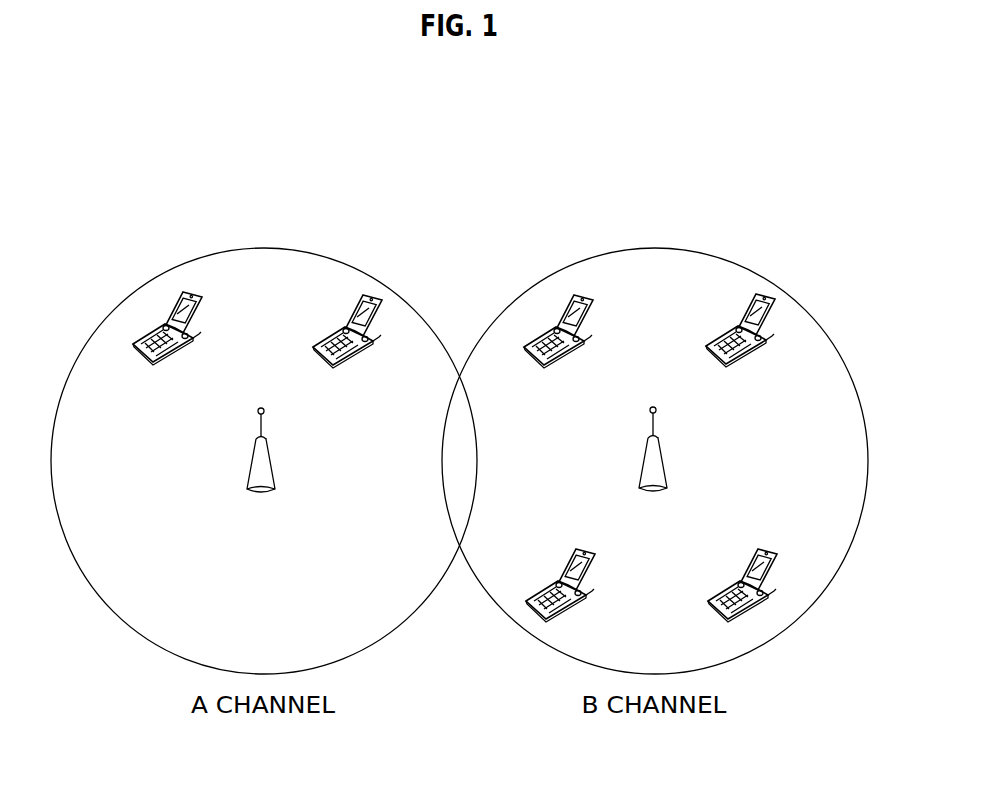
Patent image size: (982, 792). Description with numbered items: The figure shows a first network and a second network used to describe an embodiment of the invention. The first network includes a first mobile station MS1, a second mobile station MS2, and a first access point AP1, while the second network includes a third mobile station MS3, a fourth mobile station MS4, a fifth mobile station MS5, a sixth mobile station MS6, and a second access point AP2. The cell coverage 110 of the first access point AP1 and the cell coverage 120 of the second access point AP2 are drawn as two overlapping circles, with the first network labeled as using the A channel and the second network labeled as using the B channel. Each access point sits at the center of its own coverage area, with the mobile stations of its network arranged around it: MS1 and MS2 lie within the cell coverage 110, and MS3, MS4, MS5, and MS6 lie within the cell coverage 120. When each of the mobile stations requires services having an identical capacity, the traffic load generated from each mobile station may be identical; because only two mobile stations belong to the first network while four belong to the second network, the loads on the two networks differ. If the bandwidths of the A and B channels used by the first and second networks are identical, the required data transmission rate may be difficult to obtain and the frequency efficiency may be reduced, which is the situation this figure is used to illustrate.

The cell coverage of AP 1 110 is at (262, 248).
The cell coverage of AP 2 120 is at (653, 248).
The first mobile station MS1 is at (167, 342).
The second mobile station MS2 is at (347, 344).
The third mobile station MS3 is at (558, 344).
The fourth mobile station MS4 is at (740, 343).
The fifth mobile station MS5 is at (560, 595).
The sixth mobile station MS6 is at (742, 595).
The first access point AP1 is at (260, 466).
The second access point AP2 is at (652, 465).